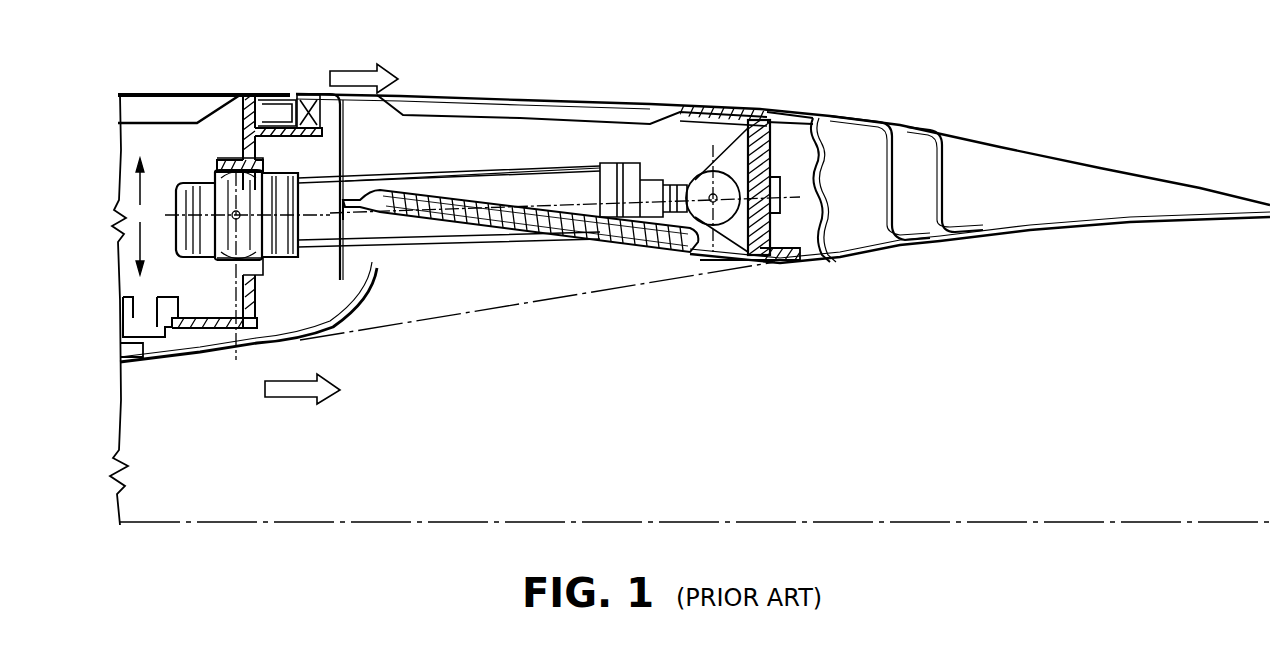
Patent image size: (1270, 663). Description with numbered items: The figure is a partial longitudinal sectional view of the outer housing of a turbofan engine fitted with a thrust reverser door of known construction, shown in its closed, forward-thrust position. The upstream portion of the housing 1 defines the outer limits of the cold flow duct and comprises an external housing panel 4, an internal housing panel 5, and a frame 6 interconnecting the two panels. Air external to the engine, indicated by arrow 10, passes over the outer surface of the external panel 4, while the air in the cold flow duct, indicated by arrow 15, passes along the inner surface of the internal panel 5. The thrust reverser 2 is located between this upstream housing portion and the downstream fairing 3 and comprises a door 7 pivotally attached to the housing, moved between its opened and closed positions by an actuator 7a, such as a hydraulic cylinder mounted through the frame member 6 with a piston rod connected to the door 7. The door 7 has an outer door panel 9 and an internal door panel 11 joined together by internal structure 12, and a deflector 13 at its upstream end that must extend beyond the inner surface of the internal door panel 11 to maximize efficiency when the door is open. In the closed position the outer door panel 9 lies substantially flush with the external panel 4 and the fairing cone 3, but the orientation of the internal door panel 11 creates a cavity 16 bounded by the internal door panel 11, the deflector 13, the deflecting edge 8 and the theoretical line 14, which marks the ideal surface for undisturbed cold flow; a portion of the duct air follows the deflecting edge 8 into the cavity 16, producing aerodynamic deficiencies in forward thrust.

The upstream portion of the housing 1 is at (139, 216).
The thrust reverser 2 is at (737, 100).
The downstream fairing 3 is at (980, 189).
The external housing panel 4 is at (204, 109).
The internal housing panel 5 is at (143, 360).
The frame 6 is at (243, 311).
The door 7 is at (557, 122).
The actuator 7a is at (520, 183).
The deflecting edge 8 is at (360, 292).
The outer door panel 9 is at (642, 110).
The arrow indicating external air flow 10 is at (343, 73).
The internal door panel 11 is at (560, 237).
The internal structure 12 is at (732, 255).
The deflector 13 is at (340, 262).
The theoretical line 14 is at (627, 292).
The arrow indicating cold flow duct air flow 15 is at (300, 393).
The cavity 16 is at (440, 288).